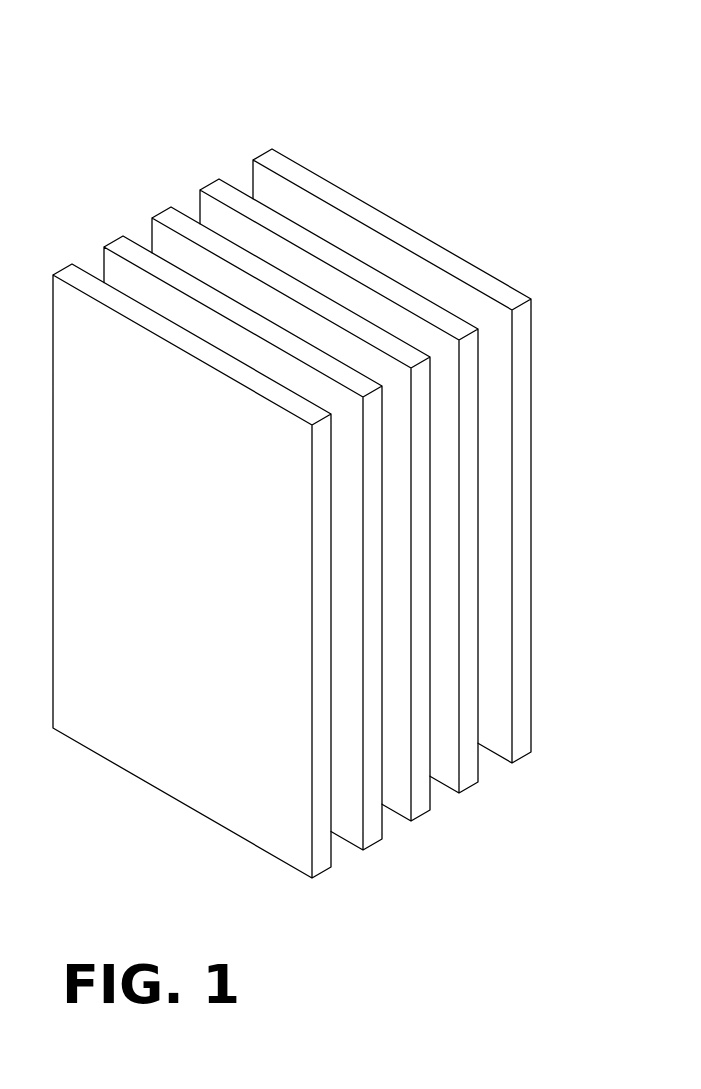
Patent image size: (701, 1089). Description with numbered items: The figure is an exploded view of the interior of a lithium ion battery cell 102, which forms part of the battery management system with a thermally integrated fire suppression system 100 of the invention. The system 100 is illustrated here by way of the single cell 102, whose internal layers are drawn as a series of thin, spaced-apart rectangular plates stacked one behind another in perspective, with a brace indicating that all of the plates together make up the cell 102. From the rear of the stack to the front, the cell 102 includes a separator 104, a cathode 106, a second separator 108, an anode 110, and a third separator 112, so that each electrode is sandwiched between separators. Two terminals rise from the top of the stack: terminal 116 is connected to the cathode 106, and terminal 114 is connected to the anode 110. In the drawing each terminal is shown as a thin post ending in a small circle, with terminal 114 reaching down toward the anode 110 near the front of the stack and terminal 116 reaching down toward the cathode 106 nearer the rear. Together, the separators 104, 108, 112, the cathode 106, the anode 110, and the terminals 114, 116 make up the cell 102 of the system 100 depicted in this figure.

The battery management system with a thermally integrated fire suppression system 100 is at (339, 507).
The lithium ion battery cell 102 is at (339, 535).
The separator 104 is at (512, 763).
The cathode 106 is at (473, 797).
The separator 108 is at (425, 822).
The anode 110 is at (378, 850).
The separator 112 is at (335, 877).
The terminal 114 is at (178, 275).
The terminal 116 is at (400, 295).